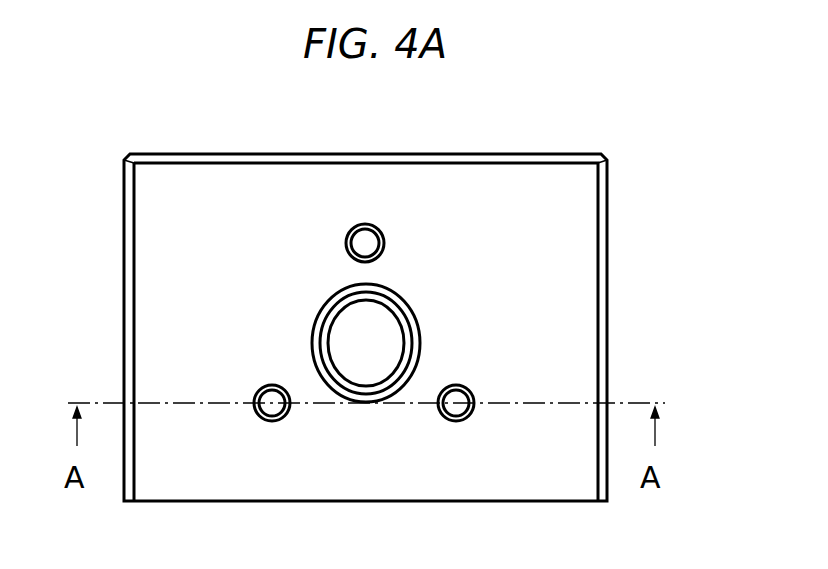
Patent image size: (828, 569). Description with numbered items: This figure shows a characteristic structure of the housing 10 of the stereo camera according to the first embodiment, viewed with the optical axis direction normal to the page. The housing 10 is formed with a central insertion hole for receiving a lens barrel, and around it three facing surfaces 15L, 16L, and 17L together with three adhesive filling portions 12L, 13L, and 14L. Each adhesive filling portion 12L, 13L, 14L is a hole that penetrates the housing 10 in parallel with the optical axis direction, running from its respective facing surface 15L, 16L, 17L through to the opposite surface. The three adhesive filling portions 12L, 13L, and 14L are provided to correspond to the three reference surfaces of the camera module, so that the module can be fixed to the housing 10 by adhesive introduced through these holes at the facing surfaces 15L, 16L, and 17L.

The housing 10 is at (326, 154).
The adhesive filling portion 12L is at (366, 243).
The facing surface 15L is at (384, 246).
The facing surface 16L is at (256, 401).
The adhesive filling portion 13L is at (272, 405).
The adhesive filling portion 14L is at (458, 402).
The facing surface 17L is at (458, 405).